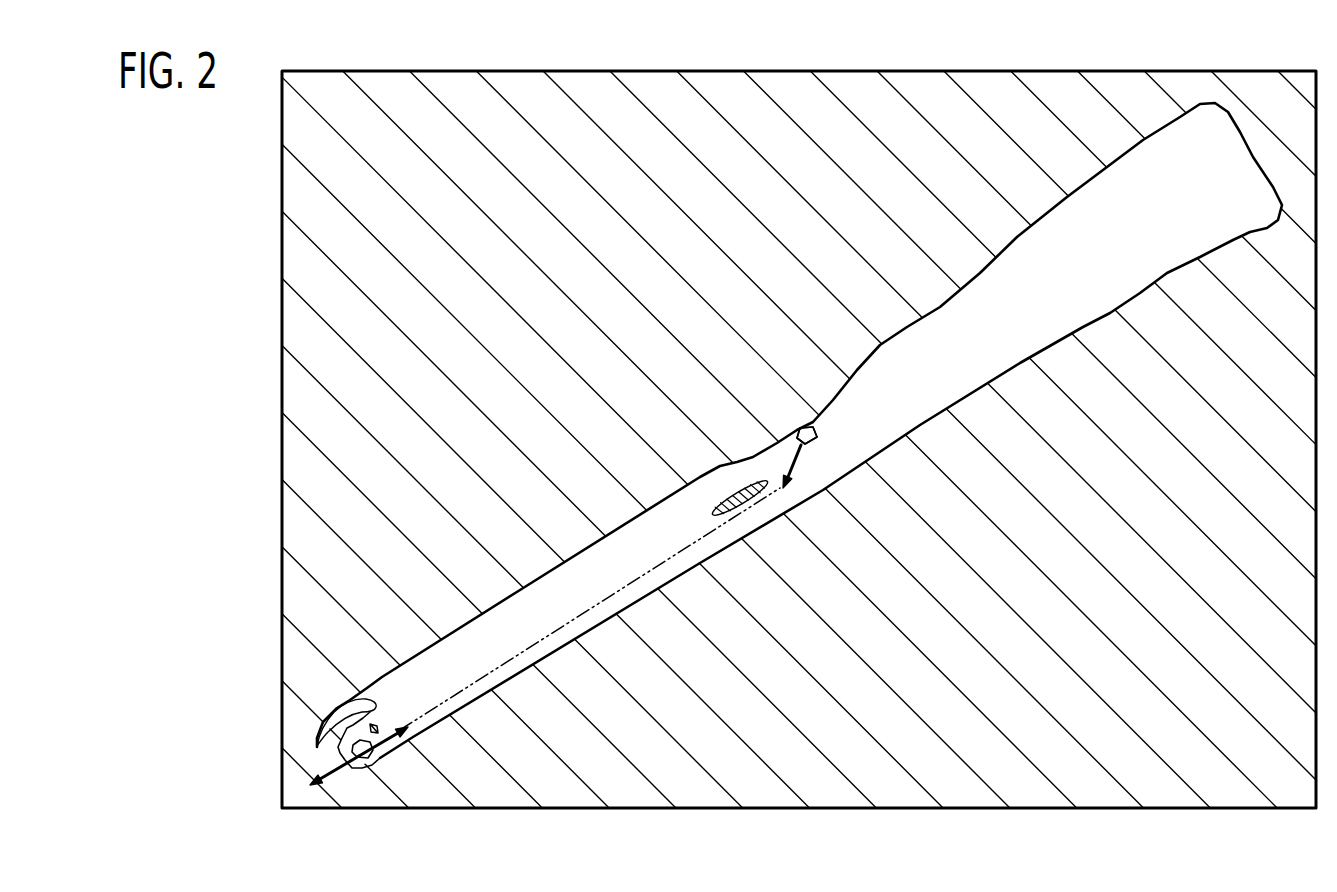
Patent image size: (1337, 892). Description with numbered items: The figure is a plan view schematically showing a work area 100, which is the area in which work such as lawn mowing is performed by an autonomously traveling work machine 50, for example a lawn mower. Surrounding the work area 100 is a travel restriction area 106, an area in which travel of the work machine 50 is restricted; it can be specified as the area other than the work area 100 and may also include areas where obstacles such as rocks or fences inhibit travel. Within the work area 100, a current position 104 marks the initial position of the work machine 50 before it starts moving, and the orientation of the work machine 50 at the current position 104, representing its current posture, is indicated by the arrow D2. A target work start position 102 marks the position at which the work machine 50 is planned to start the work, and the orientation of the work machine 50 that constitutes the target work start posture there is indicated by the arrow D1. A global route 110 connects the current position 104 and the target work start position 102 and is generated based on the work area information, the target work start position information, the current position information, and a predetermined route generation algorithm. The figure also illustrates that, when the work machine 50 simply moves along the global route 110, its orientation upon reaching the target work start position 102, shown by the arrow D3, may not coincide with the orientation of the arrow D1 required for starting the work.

The work area 100 is at (1168, 147).
The target work start position 102 is at (378, 763).
The current position 104 is at (828, 430).
The travel restriction area 106 is at (578, 86).
The work machine 50 is at (812, 430).
The global route 110 is at (637, 583).
The arrow indicating target work start posture orientation D1 is at (393, 746).
The arrow indicating current posture orientation D2 is at (805, 466).
The arrow indicating orientation after reaching target position D3 is at (346, 767).